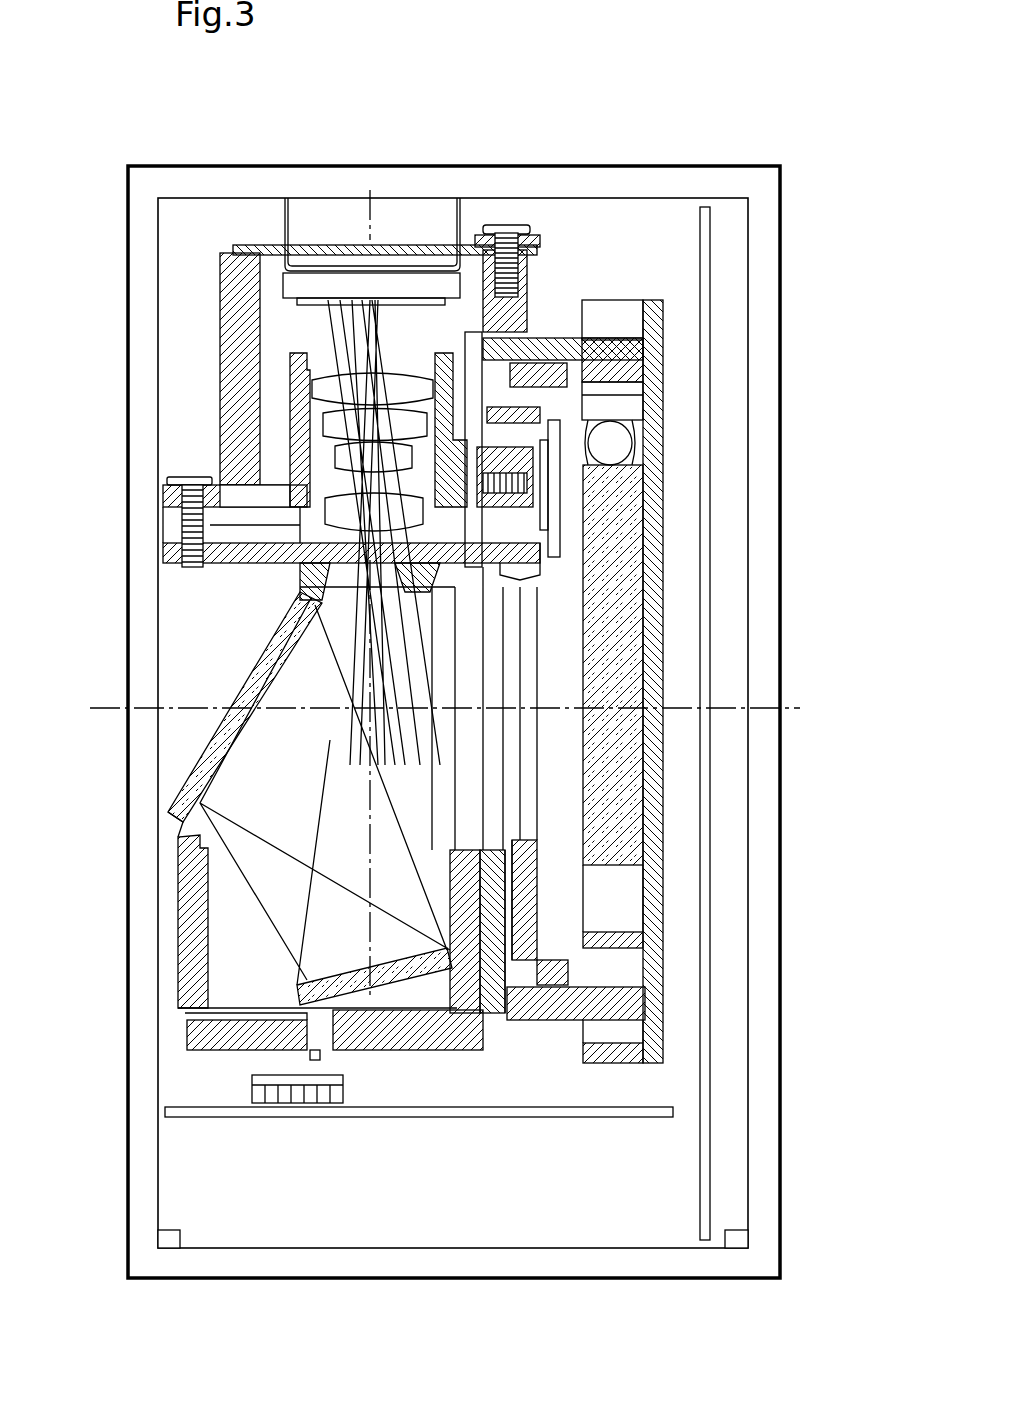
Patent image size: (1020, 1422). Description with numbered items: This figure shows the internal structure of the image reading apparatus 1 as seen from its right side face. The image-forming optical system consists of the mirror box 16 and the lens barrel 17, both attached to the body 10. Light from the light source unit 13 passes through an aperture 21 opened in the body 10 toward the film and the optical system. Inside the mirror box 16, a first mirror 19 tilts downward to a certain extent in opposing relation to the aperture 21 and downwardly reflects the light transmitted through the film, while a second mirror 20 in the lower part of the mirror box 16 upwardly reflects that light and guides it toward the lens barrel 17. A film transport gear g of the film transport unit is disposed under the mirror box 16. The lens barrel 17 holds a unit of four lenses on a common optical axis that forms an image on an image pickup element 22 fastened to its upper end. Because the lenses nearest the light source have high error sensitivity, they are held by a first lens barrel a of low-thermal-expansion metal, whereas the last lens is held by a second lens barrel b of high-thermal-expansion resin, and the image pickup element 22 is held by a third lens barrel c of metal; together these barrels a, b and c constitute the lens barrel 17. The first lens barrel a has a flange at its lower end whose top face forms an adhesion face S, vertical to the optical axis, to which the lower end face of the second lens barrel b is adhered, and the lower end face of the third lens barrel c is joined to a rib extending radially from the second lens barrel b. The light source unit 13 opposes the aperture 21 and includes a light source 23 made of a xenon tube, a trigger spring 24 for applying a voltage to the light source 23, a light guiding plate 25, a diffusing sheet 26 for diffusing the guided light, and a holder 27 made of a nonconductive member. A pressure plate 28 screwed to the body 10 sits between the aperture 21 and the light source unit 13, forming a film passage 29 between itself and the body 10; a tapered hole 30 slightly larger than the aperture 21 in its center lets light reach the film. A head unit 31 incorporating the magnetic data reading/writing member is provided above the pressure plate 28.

The image reading apparatus 1 is at (95, 1168).
The body 10 is at (490, 1012).
The light source unit 13 is at (680, 678).
The mirror box 16 is at (180, 755).
The lens barrel 17 is at (297, 483).
The first mirror 19 is at (262, 685).
The second mirror 20 is at (337, 973).
The aperture 21 is at (502, 662).
The image pickup element 22 is at (413, 275).
The light source 23 is at (612, 443).
The trigger spring 24 is at (663, 392).
The light guiding plate 25 is at (625, 583).
The diffusing sheet 26 is at (635, 883).
The holder 27 is at (665, 910).
The pressure plate 28 is at (572, 970).
The film passage 29 is at (505, 890).
The hole 30 is at (530, 768).
The head unit 31 is at (562, 517).
The adhesion face S is at (300, 512).
The first lens barrel a is at (300, 560).
The second lens barrel b is at (163, 492).
The third lens barrel c is at (220, 355).
The film transport gear g is at (190, 1043).